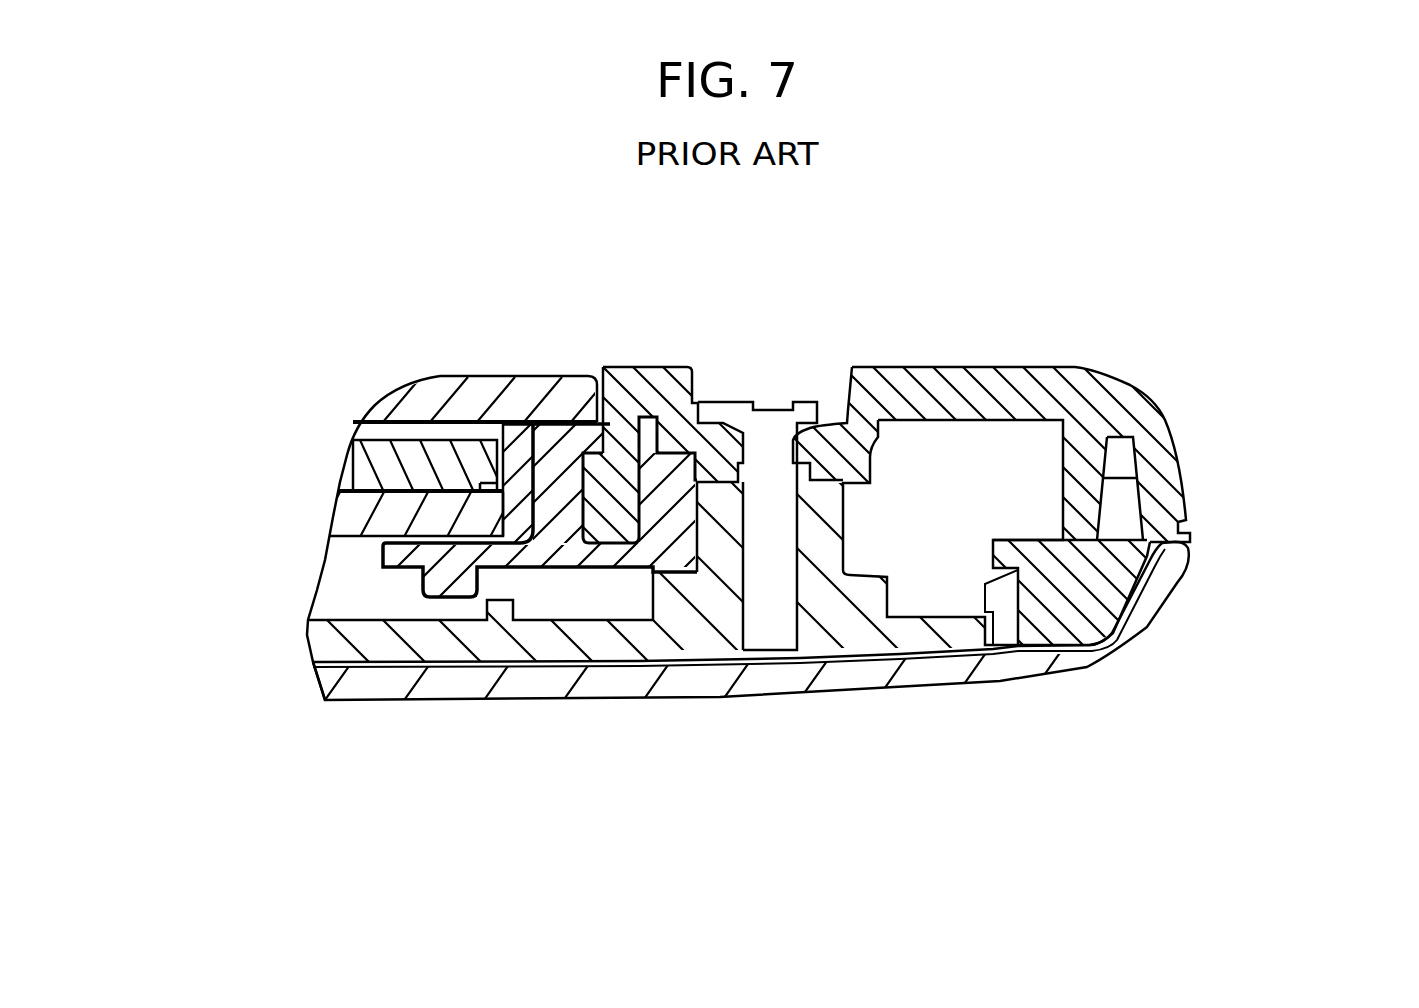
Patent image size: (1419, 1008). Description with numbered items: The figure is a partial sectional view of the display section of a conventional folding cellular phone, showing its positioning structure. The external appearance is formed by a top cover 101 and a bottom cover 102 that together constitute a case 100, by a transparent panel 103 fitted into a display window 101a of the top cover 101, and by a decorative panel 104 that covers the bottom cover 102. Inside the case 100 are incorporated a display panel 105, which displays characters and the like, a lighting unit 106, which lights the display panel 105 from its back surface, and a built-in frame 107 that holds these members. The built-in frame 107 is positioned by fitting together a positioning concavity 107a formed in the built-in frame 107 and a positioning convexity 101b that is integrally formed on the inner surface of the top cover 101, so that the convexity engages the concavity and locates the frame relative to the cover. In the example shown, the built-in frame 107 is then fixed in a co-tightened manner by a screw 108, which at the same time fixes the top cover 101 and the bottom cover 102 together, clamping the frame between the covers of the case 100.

The case 100 is at (1216, 529).
The top cover 101 is at (1150, 418).
The display window 101a is at (541, 375).
The positioning convexity 101b is at (620, 462).
The bottom cover 102 is at (1122, 572).
The transparent panel 103 is at (422, 384).
The decorative panel 104 is at (1063, 670).
The display panel 105 is at (352, 458).
The lighting unit 106 is at (345, 522).
The built-in frame 107 is at (523, 557).
The positioning concavity 107a is at (601, 540).
The screw 108 is at (786, 398).